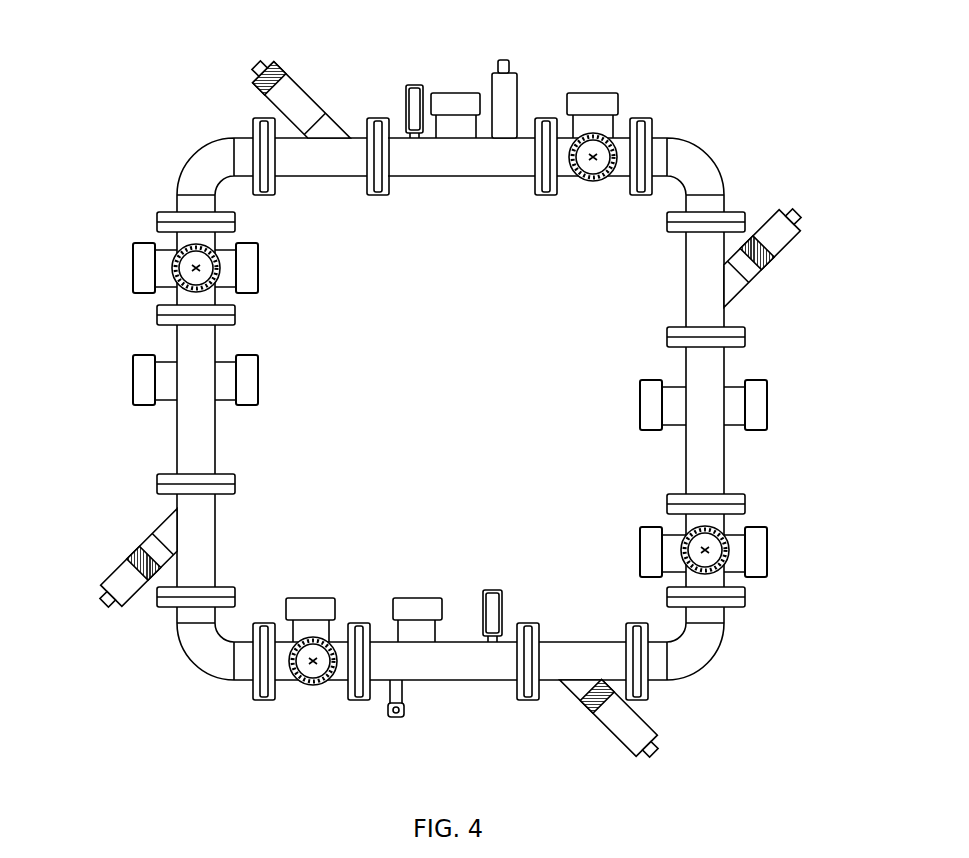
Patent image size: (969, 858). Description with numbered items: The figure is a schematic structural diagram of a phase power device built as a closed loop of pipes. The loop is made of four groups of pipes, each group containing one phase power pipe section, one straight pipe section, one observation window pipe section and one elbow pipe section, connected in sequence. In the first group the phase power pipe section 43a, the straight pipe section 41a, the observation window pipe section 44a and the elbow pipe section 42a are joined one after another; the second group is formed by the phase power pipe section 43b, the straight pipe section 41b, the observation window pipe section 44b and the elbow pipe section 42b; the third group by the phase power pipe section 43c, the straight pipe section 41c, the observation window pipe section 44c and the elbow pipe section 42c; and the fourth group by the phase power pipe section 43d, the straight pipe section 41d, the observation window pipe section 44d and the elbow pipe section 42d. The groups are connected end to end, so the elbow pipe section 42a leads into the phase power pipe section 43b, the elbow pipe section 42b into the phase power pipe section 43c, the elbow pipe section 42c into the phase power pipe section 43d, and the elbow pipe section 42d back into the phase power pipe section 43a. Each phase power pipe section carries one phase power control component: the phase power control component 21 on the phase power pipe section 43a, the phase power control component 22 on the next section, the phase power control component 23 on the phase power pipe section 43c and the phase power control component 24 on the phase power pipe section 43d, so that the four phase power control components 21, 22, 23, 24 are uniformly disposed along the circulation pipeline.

The phase power control component 21 is at (297, 99).
The phase power control component 22 is at (762, 250).
The phase power control component 23 is at (603, 705).
The phase power control component 24 is at (155, 550).
The straight pipe section 41a is at (430, 158).
The straight pipe section 41b is at (703, 408).
The straight pipe section 41c is at (405, 659).
The straight pipe section 41d is at (198, 385).
The elbow pipe section 42a is at (687, 157).
The elbow pipe section 42b is at (702, 645).
The elbow pipe section 42c is at (218, 655).
The elbow pipe section 42d is at (208, 166).
The phase power pipe section 43a is at (359, 150).
The phase power pipe section 43b is at (707, 245).
The phase power pipe section 43c is at (610, 659).
The phase power pipe section 43d is at (200, 510).
The observation window pipe section 44a is at (563, 157).
The observation window pipe section 44b is at (710, 532).
The observation window pipe section 44c is at (328, 678).
The observation window pipe section 44d is at (180, 250).